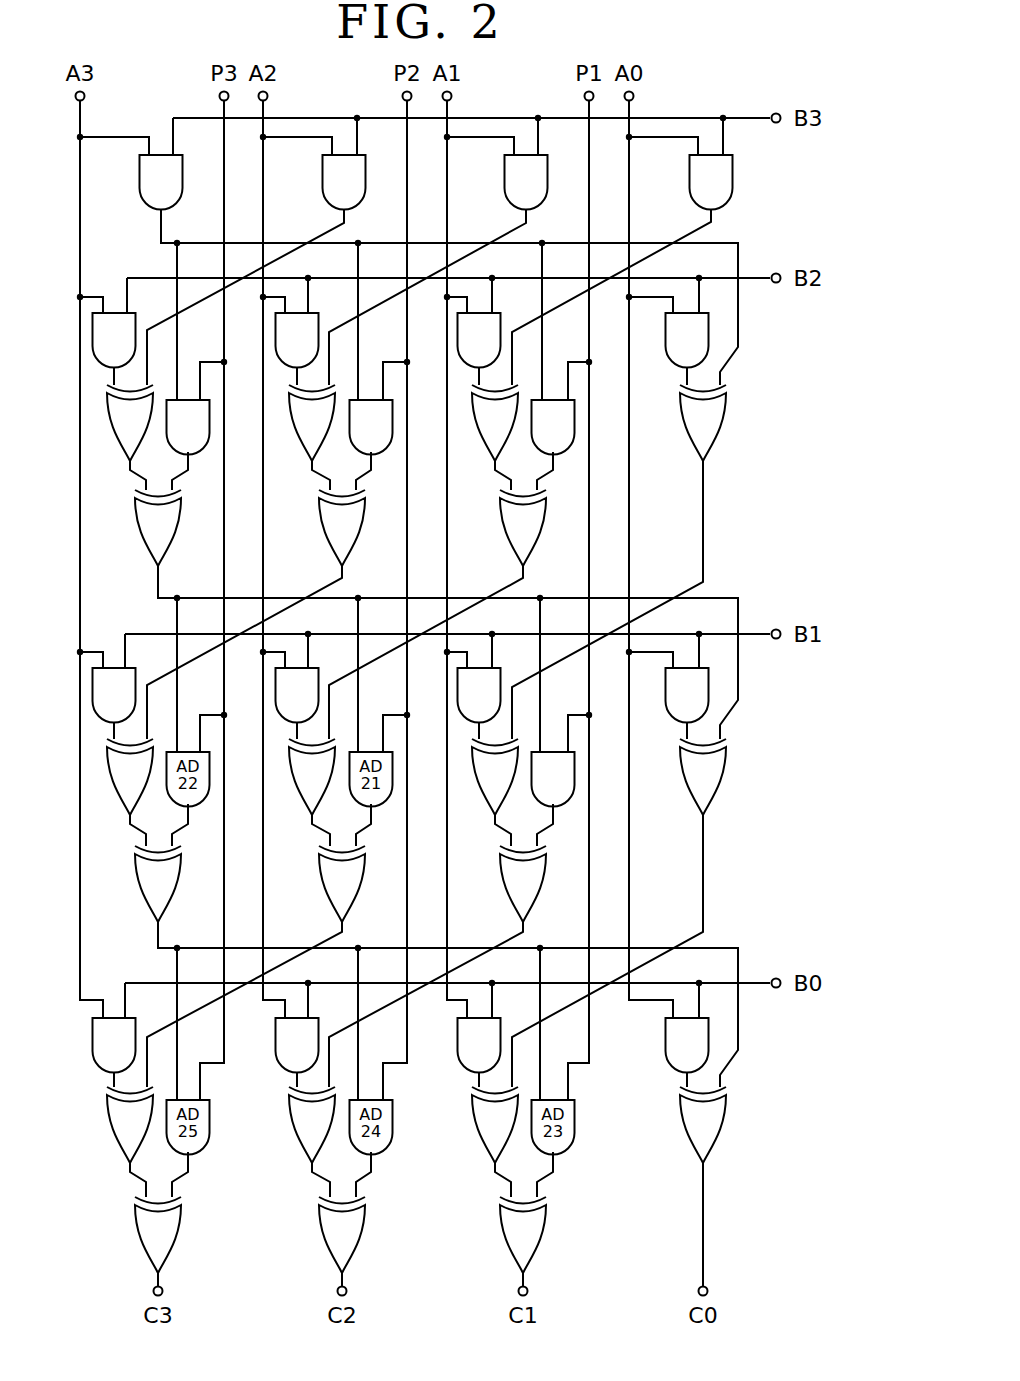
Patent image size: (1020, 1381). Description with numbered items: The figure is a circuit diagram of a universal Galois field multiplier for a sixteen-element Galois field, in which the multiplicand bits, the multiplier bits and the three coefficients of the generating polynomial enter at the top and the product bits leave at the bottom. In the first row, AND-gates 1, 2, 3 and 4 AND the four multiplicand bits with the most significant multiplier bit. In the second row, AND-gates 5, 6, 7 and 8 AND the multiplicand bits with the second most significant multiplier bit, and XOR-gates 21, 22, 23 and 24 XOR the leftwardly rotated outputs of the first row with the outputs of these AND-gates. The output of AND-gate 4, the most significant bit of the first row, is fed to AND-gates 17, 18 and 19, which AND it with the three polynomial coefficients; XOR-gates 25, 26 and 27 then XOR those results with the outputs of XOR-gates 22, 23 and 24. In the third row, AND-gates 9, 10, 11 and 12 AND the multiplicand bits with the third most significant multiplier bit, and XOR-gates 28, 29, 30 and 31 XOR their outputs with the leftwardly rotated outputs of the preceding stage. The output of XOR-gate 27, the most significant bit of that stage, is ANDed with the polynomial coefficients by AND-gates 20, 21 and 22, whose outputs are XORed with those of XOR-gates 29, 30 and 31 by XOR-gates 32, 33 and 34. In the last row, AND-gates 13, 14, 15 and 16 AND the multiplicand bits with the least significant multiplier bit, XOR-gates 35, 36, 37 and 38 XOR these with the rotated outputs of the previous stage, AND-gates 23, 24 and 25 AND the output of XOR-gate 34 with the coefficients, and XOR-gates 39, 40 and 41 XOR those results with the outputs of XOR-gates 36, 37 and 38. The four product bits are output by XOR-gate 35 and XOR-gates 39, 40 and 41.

The AND-gate 1 is at (711, 182).
The AND-gate 2 is at (526, 182).
The AND-gate 3 is at (344, 182).
The AND-gate 4 is at (161, 182).
The AND-gate 5 is at (687, 340).
The AND-gate 6 is at (479, 340).
The AND-gate 7 is at (297, 340).
The AND-gate 8 is at (114, 340).
The AND-gate 9 is at (687, 695).
The AND-gate 10 is at (479, 695).
The AND-gate 11 is at (297, 695).
The AND-gate 12 is at (114, 695).
The AND-gate 13 is at (687, 1045).
The AND-gate 14 is at (479, 1045).
The AND-gate 15 is at (297, 1045).
The AND-gate 16 is at (114, 1045).
The AND-gate 17 is at (553, 427).
The AND-gate 18 is at (371, 427).
The AND-gate 19 is at (188, 427).
The AND-gate 20 is at (553, 779).
The XOR-gate and AND-gate 21 is at (703, 423).
The XOR-gate and AND-gate 22 is at (495, 423).
The XOR-gate and AND-gate 23 is at (312, 423).
The XOR-gate and AND-gate 24 is at (130, 423).
The XOR-gate and AND-gate 25 is at (523, 528).
The XOR-gate 26 is at (342, 528).
The XOR-gate 27 is at (158, 528).
The XOR-gate 28 is at (703, 777).
The XOR-gate 29 is at (495, 777).
The XOR-gate 30 is at (312, 777).
The XOR-gate 31 is at (130, 777).
The XOR-gate 32 is at (523, 884).
The XOR-gate 33 is at (342, 884).
The XOR-gate 34 is at (158, 884).
The XOR-gate 35 is at (703, 1125).
The XOR-gate 36 is at (495, 1125).
The XOR-gate 37 is at (312, 1125).
The XOR-gate 38 is at (130, 1125).
The XOR-gate 39 is at (523, 1235).
The XOR-gate 40 is at (342, 1235).
The XOR-gate 41 is at (158, 1235).